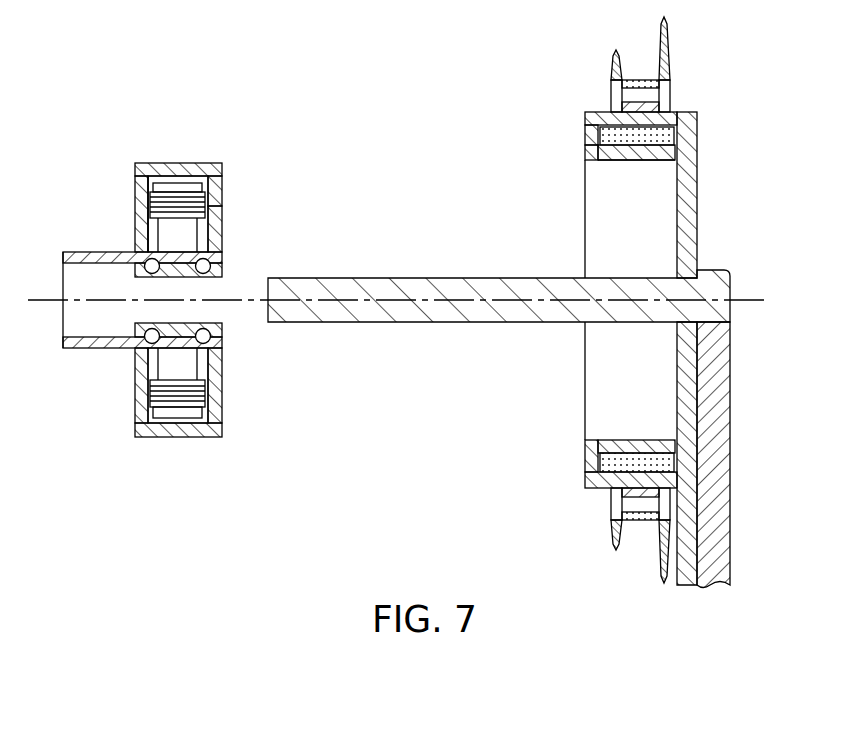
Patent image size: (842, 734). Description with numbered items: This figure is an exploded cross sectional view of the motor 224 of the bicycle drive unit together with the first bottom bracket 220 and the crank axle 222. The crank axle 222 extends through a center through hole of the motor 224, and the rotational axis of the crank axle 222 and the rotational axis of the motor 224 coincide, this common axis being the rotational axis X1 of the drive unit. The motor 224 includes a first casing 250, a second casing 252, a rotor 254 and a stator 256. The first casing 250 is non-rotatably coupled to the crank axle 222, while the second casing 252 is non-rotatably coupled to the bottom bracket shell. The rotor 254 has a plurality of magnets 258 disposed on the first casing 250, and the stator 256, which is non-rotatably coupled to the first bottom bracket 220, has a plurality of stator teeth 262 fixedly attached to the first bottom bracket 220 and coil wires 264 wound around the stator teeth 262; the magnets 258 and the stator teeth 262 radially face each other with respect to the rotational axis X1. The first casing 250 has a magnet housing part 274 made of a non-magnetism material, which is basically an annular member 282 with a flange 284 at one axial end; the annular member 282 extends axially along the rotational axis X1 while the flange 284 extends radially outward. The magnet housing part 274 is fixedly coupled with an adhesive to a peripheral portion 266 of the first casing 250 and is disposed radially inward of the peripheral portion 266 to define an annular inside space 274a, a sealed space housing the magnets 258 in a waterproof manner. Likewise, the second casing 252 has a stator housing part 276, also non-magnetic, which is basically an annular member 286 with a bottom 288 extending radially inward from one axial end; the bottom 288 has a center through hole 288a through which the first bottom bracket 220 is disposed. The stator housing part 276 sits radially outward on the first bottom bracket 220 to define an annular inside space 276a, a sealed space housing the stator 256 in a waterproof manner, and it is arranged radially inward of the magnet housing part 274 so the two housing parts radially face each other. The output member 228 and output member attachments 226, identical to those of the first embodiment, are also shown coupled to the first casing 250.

The first bottom bracket 220 is at (80, 352).
The crank axle 222 is at (407, 332).
The motor 224 is at (330, 118).
The output member attachments 226 is at (643, 68).
The output member 228 is at (632, 42).
The first casing 250 is at (709, 200).
The second casing 252 is at (125, 184).
The rotor 254 is at (565, 116).
The stator 256 is at (190, 170).
The magnets 258 is at (660, 135).
The stator teeth 262 is at (180, 236).
The coil wires 264 is at (183, 200).
The peripheral portion 266 is at (597, 112).
The magnet housing part 274 is at (583, 153).
The inside space 274a is at (617, 156).
The stator housing part 276 is at (221, 176).
The inside space 276a is at (138, 231).
The annular member 282 is at (652, 163).
The flange 284 is at (586, 136).
The annular member 286 is at (160, 163).
The bottom 288 is at (212, 222).
The center through hole 288a is at (212, 256).
The rotational axis X1 is at (746, 303).